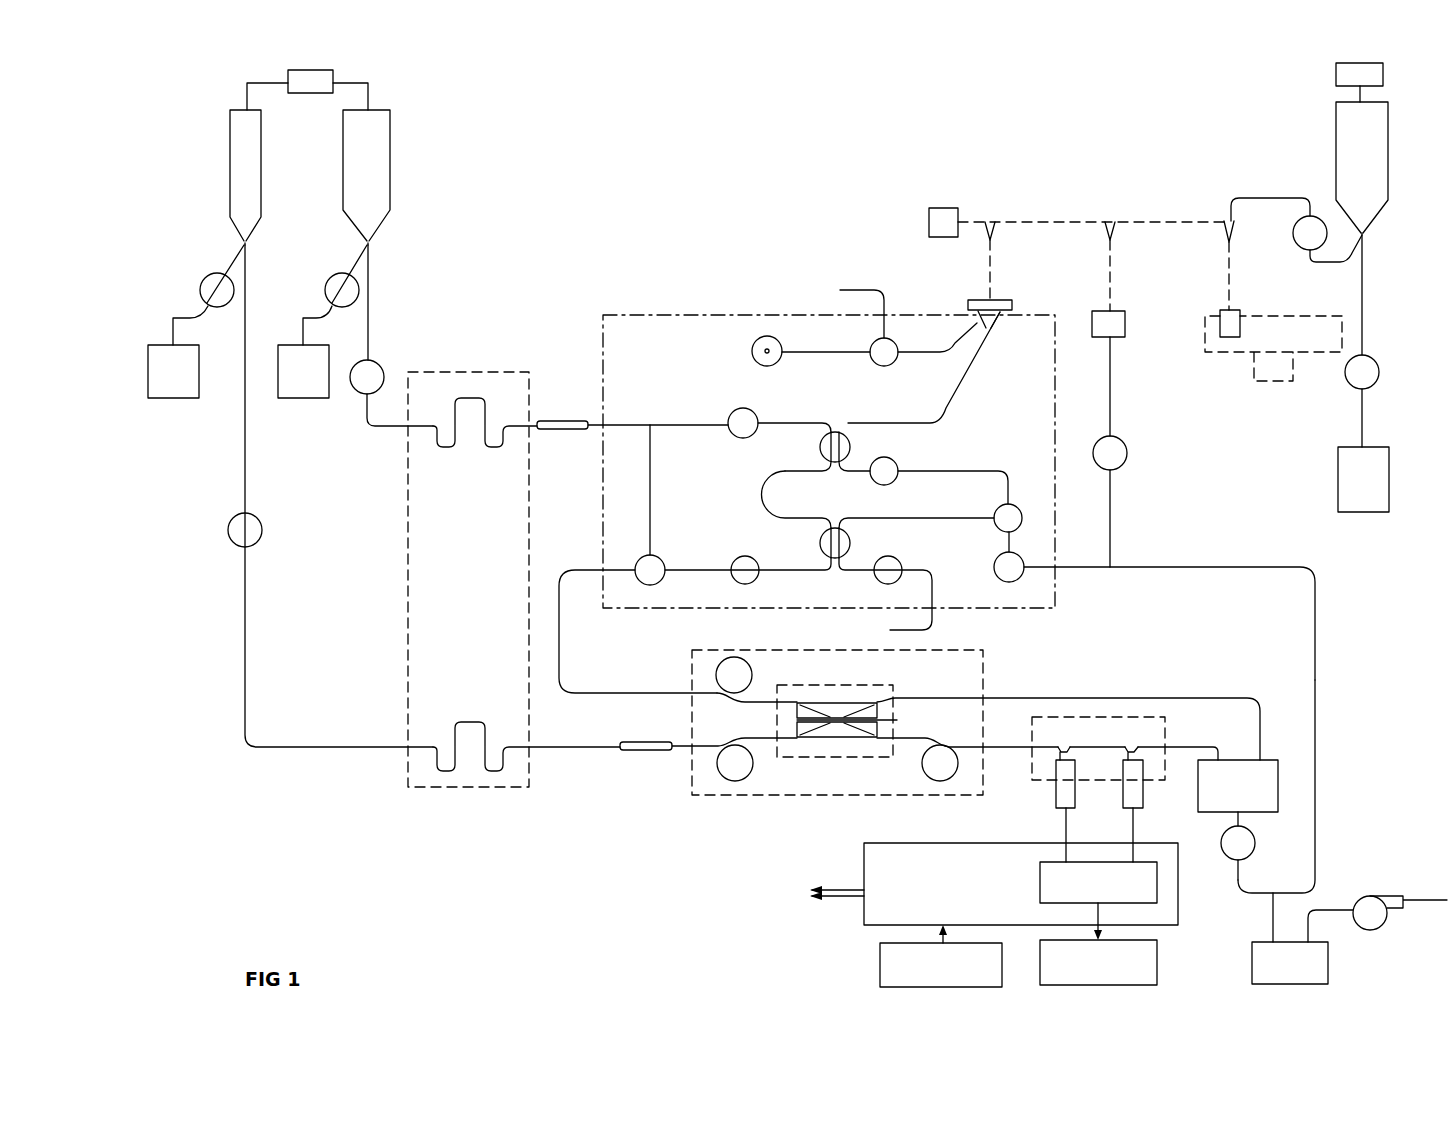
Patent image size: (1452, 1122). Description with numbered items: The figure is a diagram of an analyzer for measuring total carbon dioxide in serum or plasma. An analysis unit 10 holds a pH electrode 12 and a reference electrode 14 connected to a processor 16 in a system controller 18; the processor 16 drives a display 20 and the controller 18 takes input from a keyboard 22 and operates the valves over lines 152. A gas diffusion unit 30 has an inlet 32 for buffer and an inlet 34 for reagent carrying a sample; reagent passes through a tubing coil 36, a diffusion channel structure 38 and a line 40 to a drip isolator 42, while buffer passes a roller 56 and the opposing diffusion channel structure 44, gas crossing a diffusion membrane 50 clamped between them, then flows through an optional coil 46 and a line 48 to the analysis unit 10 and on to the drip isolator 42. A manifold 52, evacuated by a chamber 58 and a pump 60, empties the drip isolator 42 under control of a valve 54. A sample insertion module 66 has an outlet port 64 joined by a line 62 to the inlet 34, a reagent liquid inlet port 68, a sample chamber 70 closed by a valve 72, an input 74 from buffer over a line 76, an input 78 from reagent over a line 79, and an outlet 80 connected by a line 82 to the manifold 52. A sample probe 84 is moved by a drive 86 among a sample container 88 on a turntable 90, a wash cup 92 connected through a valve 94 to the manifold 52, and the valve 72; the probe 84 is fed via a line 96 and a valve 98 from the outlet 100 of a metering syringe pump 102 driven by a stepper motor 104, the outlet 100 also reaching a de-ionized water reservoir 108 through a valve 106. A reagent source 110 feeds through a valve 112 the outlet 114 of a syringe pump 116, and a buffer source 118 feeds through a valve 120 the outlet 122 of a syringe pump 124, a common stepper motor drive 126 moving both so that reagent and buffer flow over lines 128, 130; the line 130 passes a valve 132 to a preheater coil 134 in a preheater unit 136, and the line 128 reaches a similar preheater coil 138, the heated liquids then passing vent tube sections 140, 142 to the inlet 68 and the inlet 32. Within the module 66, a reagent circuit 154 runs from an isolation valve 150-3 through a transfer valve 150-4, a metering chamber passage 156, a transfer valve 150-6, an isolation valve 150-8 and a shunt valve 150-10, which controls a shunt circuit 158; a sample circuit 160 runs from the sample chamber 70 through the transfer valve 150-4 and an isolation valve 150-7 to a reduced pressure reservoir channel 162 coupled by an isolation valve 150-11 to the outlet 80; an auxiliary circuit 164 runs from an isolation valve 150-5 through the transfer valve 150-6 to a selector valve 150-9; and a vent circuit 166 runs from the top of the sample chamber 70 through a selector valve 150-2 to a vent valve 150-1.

The analysis unit 10 is at (1165, 720).
The pH electrode 12 is at (1056, 795).
The reference electrode 14 is at (1143, 795).
The processor 16 is at (1152, 903).
The system controller 18 is at (864, 925).
The display 20 is at (1157, 965).
The keyboard 22 is at (880, 976).
The gas diffusion unit 30 is at (735, 800).
The inlet 32 is at (690, 748).
The inlet 34 is at (700, 693).
The tubing coil 36 is at (752, 675).
The diffusion channel structure 38 is at (848, 700).
The line 40 is at (1013, 698).
The drip isolator 42 is at (1278, 762).
The diffusion channel structure 44 is at (813, 738).
The optional coil 46 is at (922, 770).
The line 48 is at (1003, 752).
The diffusion membrane 50 is at (897, 720).
The manifold 52 is at (1259, 896).
The valve 54 is at (1222, 852).
The roller 56 is at (720, 776).
The chamber 58 is at (1328, 962).
The pump 60 is at (1385, 897).
The line 62 is at (560, 640).
The outlet port 64 is at (605, 568).
The sample insertion module 66 is at (599, 313).
The reagent liquid inlet port 68 is at (600, 420).
The sample chamber 70 is at (978, 322).
The valve 72 is at (1000, 300).
The input 74 is at (884, 310).
The line 76 is at (863, 290).
The input 78 is at (932, 614).
The line 79 is at (890, 630).
The outlet 80 is at (1057, 567).
The line 82 is at (1210, 567).
The sample probe 84 is at (1225, 236).
The drive 86 is at (930, 208).
The sample container 88 is at (1220, 316).
The turntable 90 is at (1210, 355).
The wash cup 92 is at (1118, 311).
The valve 94 is at (1127, 453).
The line 96 is at (1290, 198).
The valve 98 is at (1294, 248).
The outlet 100 is at (1368, 238).
The metering syringe pump 102 is at (1388, 163).
The stepper motor 104 is at (1383, 74).
The valve 106 is at (1379, 375).
The reservoir 108 is at (1389, 490).
The source of reagent liquid 110 is at (300, 398).
The valve 112 is at (329, 283).
The outlet 114 is at (370, 243).
The syringe pump 116 is at (392, 138).
The source of buffer liquid 118 is at (172, 398).
The valve 120 is at (200, 290).
The outlet 122 is at (243, 241).
The syringe pump 124 is at (230, 150).
The stepper motor drive 126 is at (308, 93).
The line 128 is at (370, 333).
The line 130 is at (244, 465).
The valve 132 is at (262, 530).
The preheater coil 134 is at (478, 720).
The preheater unit 136 is at (421, 790).
The preheater coil 138 is at (442, 447).
The vent tube section 140 is at (567, 432).
The vent tube section 142 is at (622, 751).
The vent valve 150-1 is at (755, 348).
The selector valve 150-2 is at (876, 348).
The isolation valve 150-3 is at (741, 410).
The transfer valve 150-4 is at (832, 466).
The isolation valve 150-5 is at (897, 557).
The transfer valve 150-6 is at (833, 562).
The isolation valve 150-7 is at (894, 466).
The isolation valve 150-8 is at (744, 556).
The selector valve 150-9 is at (1003, 505).
The shunt valve 150-10 is at (655, 577).
The isolation valve 150-11 is at (1005, 580).
The lines 152 is at (843, 890).
The reagent circuit 154 is at (797, 422).
The metering chamber passage 156 is at (768, 500).
The shunt circuit 158 is at (652, 488).
The sample circuit 160 is at (947, 403).
The reduced pressure reservoir channel 162 is at (978, 470).
The auxiliary circuit 164 is at (880, 518).
The vent circuit 166 is at (945, 352).